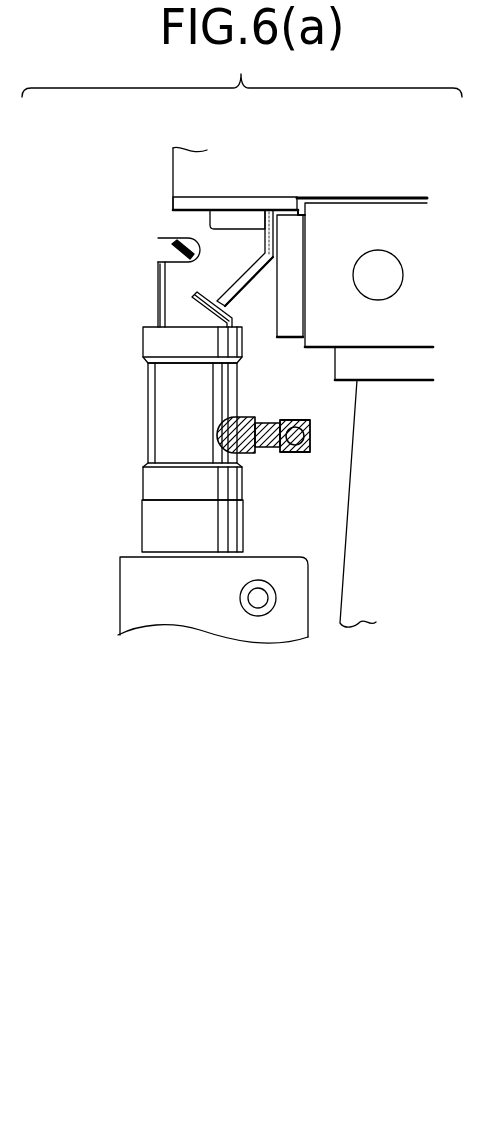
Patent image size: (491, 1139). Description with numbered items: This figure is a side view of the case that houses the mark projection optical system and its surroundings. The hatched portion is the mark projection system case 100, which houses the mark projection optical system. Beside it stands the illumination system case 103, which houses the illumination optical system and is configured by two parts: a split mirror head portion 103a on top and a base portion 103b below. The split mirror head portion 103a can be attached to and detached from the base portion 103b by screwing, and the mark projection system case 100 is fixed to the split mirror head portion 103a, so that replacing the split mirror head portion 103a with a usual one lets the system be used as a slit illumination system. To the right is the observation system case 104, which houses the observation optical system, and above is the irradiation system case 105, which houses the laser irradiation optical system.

The mark projection system case 100 is at (295, 452).
The illumination system case 103 is at (161, 480).
The split mirror head portion 103a is at (103, 232).
The base portion 103b is at (103, 495).
The observation system case 104 is at (368, 320).
The irradiation system case 105 is at (273, 177).